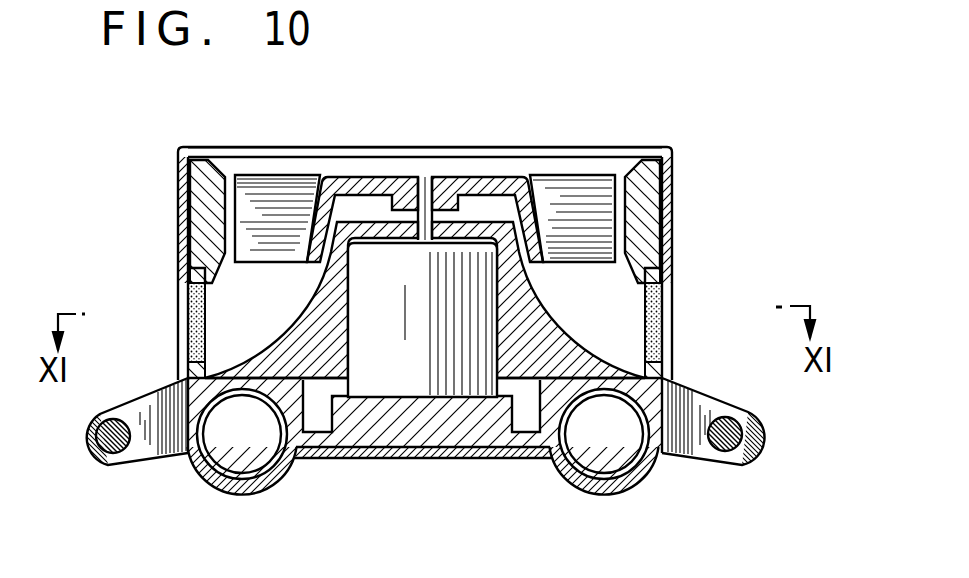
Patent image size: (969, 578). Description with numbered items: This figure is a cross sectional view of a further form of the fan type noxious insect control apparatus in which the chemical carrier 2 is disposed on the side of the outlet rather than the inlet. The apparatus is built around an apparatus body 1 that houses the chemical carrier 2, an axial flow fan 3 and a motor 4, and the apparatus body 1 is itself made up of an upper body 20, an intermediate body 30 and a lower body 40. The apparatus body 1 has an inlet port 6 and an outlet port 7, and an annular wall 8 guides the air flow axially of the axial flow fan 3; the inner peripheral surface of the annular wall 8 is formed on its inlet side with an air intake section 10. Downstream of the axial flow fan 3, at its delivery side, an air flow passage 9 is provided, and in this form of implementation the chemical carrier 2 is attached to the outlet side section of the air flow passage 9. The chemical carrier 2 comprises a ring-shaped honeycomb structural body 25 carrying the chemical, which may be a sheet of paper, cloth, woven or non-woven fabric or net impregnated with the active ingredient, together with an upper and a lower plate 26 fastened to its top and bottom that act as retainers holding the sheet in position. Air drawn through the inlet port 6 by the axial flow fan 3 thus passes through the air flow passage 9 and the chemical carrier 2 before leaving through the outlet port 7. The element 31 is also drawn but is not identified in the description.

The apparatus body 1 is at (682, 152).
The chemical carrier 2 is at (663, 296).
The axial flow fan 3 is at (277, 195).
The motor 4 is at (422, 343).
The inlet port 6 is at (371, 152).
The outlet port 7 is at (183, 306).
The annular wall 8 is at (650, 187).
The air flow passage 9 is at (600, 313).
The air intake section 10 is at (609, 158).
The upper body 20 is at (178, 217).
The honeycomb structural body 25 is at (643, 345).
The upper and lower plate 26 is at (665, 252).
The intermediate body 30 is at (322, 353).
The inner wall 31 is at (368, 357).
The lower body 40 is at (468, 425).